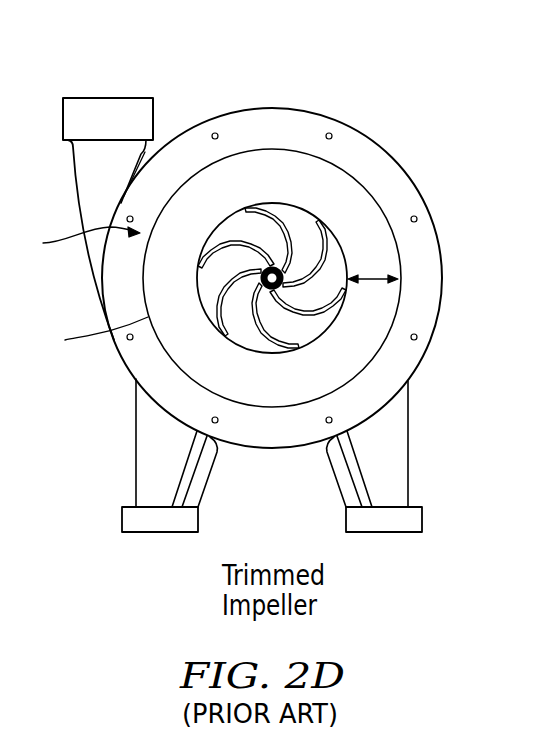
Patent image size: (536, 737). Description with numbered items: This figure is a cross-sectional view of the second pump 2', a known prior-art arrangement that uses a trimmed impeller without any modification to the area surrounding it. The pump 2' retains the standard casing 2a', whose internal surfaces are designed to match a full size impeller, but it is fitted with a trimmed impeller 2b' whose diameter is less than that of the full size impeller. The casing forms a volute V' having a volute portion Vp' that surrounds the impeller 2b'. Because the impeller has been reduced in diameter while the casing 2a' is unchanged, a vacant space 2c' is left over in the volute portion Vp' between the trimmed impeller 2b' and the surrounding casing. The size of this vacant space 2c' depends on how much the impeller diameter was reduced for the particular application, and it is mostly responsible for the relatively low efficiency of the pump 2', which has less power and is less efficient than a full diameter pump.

The second pump 2' is at (252, 237).
The standard casing 2a' is at (316, 455).
The trimmed impeller 2b' is at (327, 237).
The vacant space 2c' is at (424, 239).
The volute V' is at (80, 242).
The volute portion Vp' is at (87, 341).